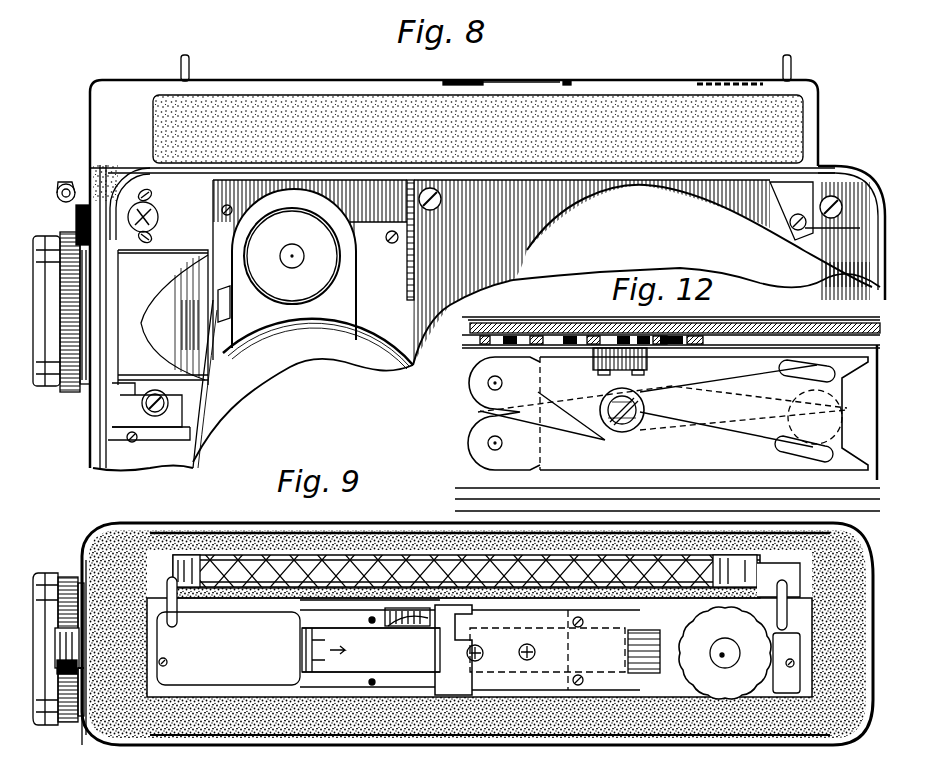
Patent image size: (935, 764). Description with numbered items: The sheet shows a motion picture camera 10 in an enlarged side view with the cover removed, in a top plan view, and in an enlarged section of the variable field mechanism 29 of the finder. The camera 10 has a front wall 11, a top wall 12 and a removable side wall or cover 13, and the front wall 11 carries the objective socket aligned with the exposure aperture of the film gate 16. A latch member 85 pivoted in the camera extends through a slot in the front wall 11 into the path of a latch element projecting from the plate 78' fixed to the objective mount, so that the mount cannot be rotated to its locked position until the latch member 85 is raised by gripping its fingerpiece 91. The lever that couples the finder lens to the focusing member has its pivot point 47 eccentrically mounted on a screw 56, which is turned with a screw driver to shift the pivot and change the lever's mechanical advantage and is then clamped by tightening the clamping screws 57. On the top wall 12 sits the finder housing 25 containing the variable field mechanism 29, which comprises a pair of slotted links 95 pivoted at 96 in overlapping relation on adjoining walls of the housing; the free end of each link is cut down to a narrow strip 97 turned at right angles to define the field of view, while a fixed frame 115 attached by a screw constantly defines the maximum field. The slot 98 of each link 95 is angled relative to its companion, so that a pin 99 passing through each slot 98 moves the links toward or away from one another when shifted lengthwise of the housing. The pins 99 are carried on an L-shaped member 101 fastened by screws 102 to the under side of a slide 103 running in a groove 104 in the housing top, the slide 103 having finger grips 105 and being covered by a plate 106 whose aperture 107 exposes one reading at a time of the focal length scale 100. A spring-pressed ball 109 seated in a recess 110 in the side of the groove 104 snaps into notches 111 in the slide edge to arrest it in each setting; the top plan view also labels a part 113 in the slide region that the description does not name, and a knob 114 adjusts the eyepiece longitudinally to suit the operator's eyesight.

In FIG. 8, the motion picture camera 10 is at (828, 170).
In FIG. 9, the motion picture camera 10 is at (827, 720).
In FIG. 8, the front wall 11 is at (93, 440).
In FIG. 9, the front wall 11 is at (80, 713).
In FIG. 8, the top wall 12 is at (568, 173).
In FIG. 9, the removable side wall or cover 13 is at (285, 727).
In FIG. 8, the film gate 16 is at (230, 352).
In FIG. 8, the finder housing 25 is at (102, 80).
In FIG. 9, the finder housing 25 is at (200, 693).
In FIG. 12, the variable field mechanism 29 is at (478, 412).
In FIG. 8, the pivot point 47 is at (113, 167).
In FIG. 8, the screw 56 is at (153, 216).
In FIG. 8, the clamping screws 57 is at (147, 195).
In FIG. 8, the plate 78' is at (125, 346).
In FIG. 9, the plate 78' is at (63, 612).
In FIG. 8, the latch member 85 is at (76, 208).
In FIG. 9, the latch member 85 is at (68, 665).
In FIG. 8, the fingerpiece 91 is at (65, 183).
In FIG. 9, the fingerpiece 91 is at (50, 645).
In FIG. 12, the slotted links 95 is at (487, 463).
In FIG. 12, the pivot 96 is at (498, 318).
In FIG. 12, the narrow strip 97 is at (877, 415).
In FIG. 12, the slot 98 is at (806, 417).
In FIG. 12, the pin 99 is at (602, 352).
In FIG. 9, the scale 100 is at (302, 648).
In FIG. 12, the L-shaped member 101 is at (757, 318).
In FIG. 12, the screws 102 is at (552, 320).
In FIG. 9, the screws 102 is at (540, 650).
In FIG. 8, the slide 103 is at (567, 82).
In FIG. 12, the slide 103 is at (793, 320).
In FIG. 9, the slide 103 is at (332, 733).
In FIG. 12, the groove 104 is at (845, 327).
In FIG. 9, the groove 104 is at (302, 667).
In FIG. 8, the finger grips 105 is at (473, 82).
In FIG. 9, the finger grips 105 is at (425, 613).
In FIG. 8, the plate 106 is at (537, 80).
In FIG. 9, the plate 106 is at (228, 648).
In FIG. 9, the aperture 107 is at (460, 650).
In FIG. 9, the spring-pressed ball 109 is at (400, 613).
In FIG. 9, the recess 110 is at (383, 613).
In FIG. 9, the notches 111 is at (304, 634).
In FIG. 9, the slide guide 113 is at (580, 657).
In FIG. 8, the knob 114 is at (728, 78).
In FIG. 9, the knob 114 is at (737, 693).
In FIG. 9, the fixed frame 115 is at (717, 650).